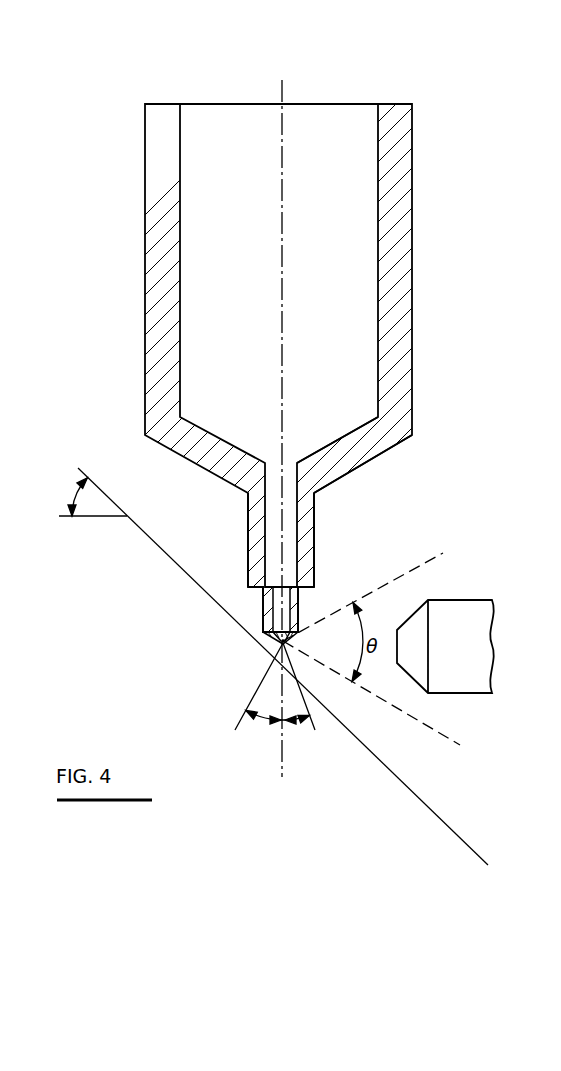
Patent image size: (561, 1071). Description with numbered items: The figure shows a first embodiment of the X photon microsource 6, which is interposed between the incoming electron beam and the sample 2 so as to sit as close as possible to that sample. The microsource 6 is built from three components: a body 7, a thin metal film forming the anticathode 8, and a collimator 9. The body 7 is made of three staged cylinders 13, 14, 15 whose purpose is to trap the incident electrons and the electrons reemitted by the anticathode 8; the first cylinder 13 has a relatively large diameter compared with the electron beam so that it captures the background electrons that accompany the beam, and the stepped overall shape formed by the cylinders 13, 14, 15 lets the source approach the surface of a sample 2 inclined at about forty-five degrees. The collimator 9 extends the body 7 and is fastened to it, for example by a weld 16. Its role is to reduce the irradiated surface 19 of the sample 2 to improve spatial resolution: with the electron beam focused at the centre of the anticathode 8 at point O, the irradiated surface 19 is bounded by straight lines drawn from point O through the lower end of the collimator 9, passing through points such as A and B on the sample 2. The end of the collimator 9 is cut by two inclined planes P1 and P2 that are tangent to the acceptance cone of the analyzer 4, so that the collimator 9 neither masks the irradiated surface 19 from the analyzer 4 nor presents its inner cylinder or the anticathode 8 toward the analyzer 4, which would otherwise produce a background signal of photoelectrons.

The sample to be analyzed 2 is at (158, 548).
The analyzer 4 is at (460, 620).
The X photon microsource 6 is at (143, 277).
The body 7 is at (398, 225).
The anticathode 8 is at (300, 608).
The collimator 9 is at (268, 636).
The first cylinder 13 is at (360, 455).
The second cylinder 14 is at (305, 528).
The third cylinder 15 is at (237, 586).
The weld 16 is at (265, 631).
The irradiated surface 19 is at (273, 662).
The point A is at (265, 657).
The point B is at (300, 680).
The point O is at (272, 631).
The first inclined plane P1 is at (363, 597).
The second inclined plane P2 is at (371, 693).